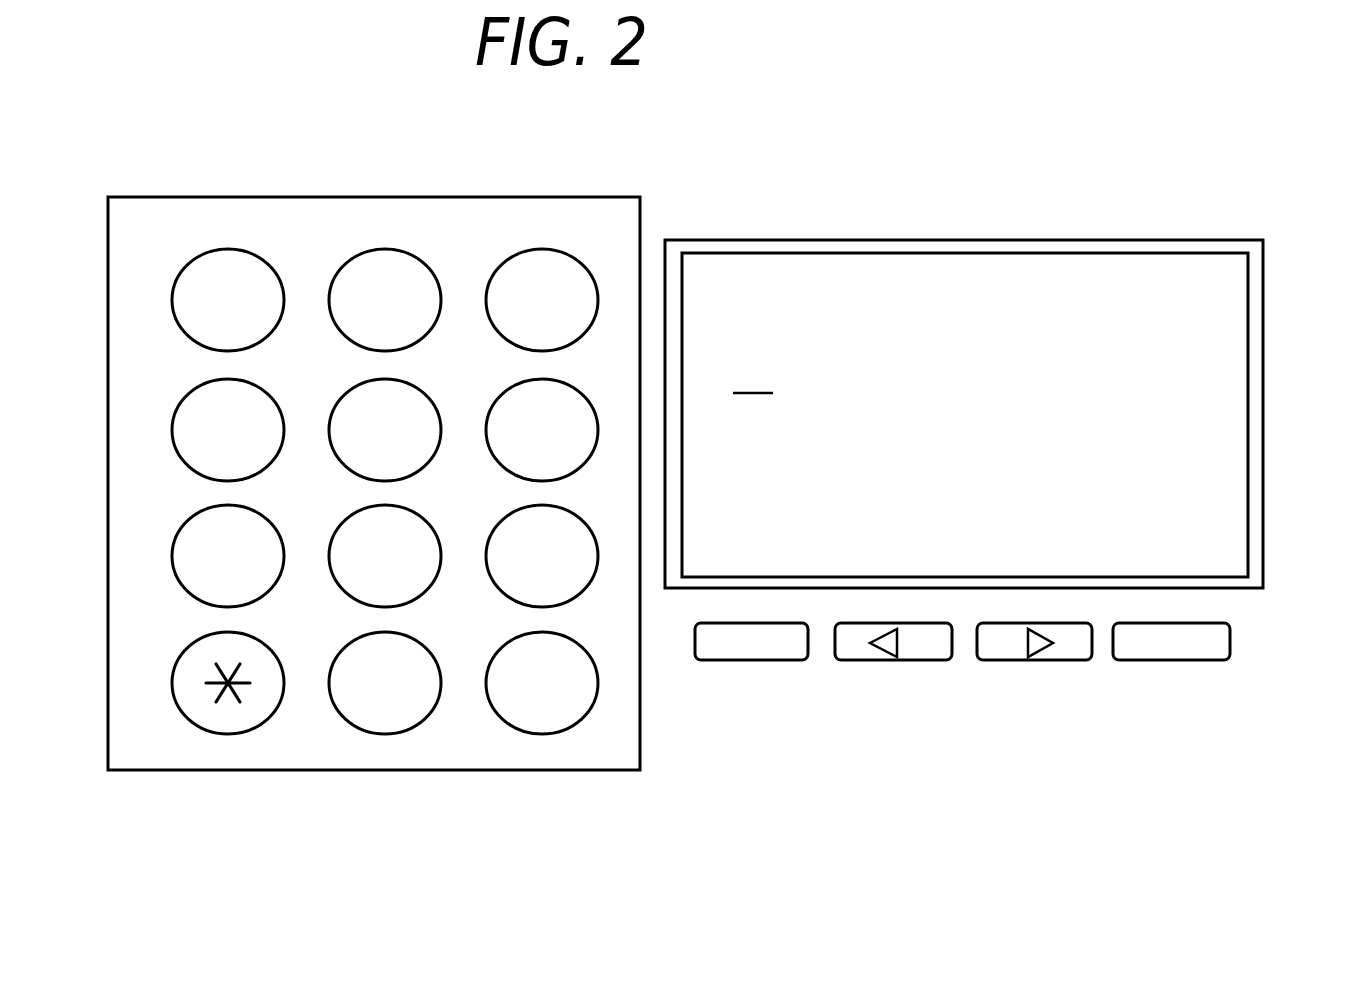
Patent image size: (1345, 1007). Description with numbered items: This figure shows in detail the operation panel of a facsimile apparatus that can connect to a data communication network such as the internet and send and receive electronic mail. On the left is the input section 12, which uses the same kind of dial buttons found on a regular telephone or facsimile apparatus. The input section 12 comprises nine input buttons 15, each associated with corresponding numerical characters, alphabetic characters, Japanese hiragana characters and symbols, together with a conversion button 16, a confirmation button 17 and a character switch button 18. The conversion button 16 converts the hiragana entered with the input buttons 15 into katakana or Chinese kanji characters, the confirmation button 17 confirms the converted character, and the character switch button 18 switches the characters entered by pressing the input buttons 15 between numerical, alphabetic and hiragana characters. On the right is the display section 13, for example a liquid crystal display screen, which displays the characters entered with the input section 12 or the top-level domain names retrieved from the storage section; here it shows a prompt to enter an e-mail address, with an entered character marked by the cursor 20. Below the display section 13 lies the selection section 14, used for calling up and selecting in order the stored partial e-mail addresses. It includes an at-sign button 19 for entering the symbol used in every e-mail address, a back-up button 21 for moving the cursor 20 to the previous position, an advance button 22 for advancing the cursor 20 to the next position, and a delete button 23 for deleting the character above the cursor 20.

The input section 12 is at (104, 452).
The display section 13 is at (1266, 370).
The selection section 14 is at (1236, 625).
The input buttons 15 is at (398, 242).
The conversion button 16 is at (543, 723).
The confirmation button 17 is at (368, 732).
The character switch button 18 is at (203, 720).
The at-sign button 19 is at (782, 650).
The cursor 20 is at (762, 396).
The back-up button 21 is at (933, 650).
The advance button 22 is at (1078, 645).
The delete button 23 is at (1215, 655).